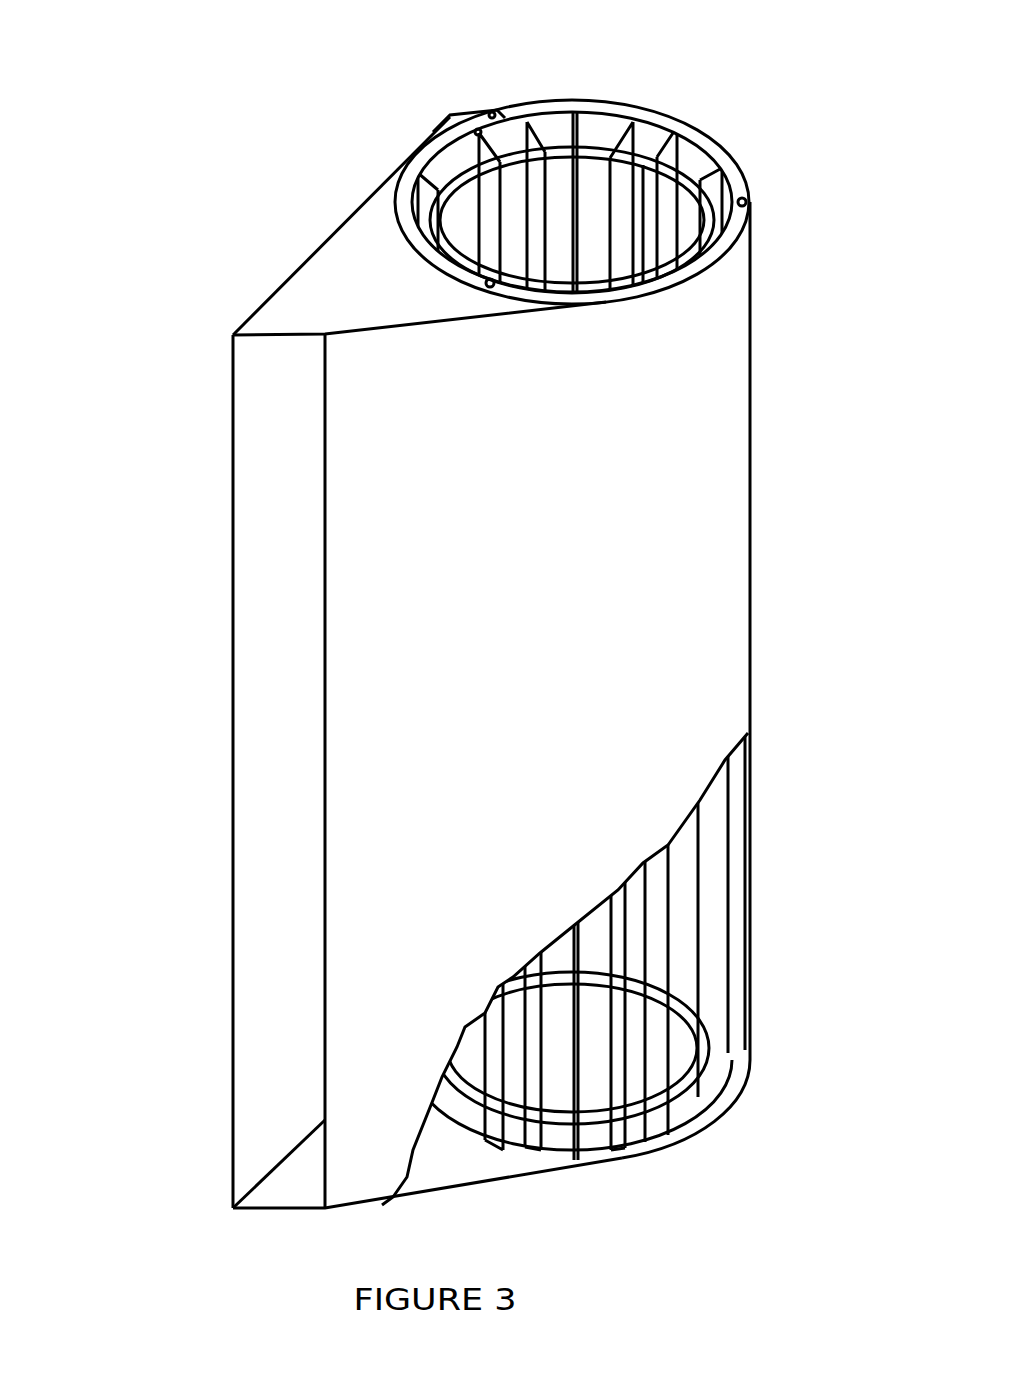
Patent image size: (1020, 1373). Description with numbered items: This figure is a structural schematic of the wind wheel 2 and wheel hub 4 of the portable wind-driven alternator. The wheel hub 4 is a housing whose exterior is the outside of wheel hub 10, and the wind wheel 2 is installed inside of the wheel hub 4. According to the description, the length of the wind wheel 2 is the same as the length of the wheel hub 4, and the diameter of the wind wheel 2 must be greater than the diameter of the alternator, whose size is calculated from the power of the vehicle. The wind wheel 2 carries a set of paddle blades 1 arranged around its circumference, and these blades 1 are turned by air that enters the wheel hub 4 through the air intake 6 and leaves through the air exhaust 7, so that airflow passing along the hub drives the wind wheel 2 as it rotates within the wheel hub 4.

The paddle blade 1 is at (430, 188).
The wind wheel 2 is at (478, 130).
The wheel hub 4 is at (468, 500).
The air intake 6 is at (280, 615).
The air exhaust 7 is at (463, 113).
The outside of wheel hub 10 is at (742, 202).